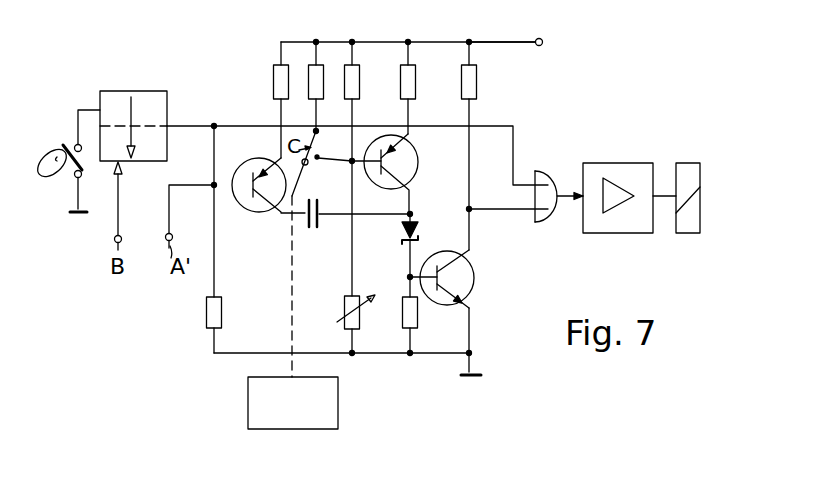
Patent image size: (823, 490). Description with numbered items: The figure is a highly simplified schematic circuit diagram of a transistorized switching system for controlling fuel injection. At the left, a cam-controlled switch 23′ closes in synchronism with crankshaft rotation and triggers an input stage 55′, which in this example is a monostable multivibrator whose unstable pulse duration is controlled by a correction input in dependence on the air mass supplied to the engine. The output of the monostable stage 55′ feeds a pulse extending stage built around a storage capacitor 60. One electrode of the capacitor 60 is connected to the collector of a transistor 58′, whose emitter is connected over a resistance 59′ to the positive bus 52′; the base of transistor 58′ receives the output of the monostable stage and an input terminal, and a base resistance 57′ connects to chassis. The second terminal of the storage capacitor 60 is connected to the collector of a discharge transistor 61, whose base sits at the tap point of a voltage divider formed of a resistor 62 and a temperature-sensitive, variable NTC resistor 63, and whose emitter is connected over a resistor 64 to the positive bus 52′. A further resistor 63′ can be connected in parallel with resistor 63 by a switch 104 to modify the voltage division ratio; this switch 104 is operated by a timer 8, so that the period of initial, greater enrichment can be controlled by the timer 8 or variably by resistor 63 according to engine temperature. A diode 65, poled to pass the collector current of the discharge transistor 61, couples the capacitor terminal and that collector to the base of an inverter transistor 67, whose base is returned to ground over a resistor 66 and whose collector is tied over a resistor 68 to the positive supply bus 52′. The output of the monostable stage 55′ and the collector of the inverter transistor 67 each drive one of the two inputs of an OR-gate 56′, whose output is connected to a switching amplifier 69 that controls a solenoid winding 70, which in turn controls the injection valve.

The switch 23′ is at (62, 146).
The input stage 55′ is at (128, 91).
The resistance 59′ is at (274, 82).
The resistor 63′ is at (318, 78).
The resistor 62 is at (360, 85).
The resistor 64 is at (416, 82).
The resistor 68 is at (477, 82).
The positive bus 52′ is at (498, 40).
The transistor 58′ is at (258, 213).
The switch 104 is at (332, 253).
The storage capacitor 60 is at (318, 207).
The discharge transistor 61 is at (418, 162).
The diode 65 is at (420, 229).
The inverter transistor 67 is at (476, 279).
The resistor 66 is at (420, 312).
The variable resistor 63 is at (343, 305).
The base resistance 57′ is at (224, 315).
The timer 8 is at (338, 400).
The OR-gate 56′ is at (536, 171).
The switching amplifier 69 is at (599, 222).
The solenoid winding 70 is at (690, 233).